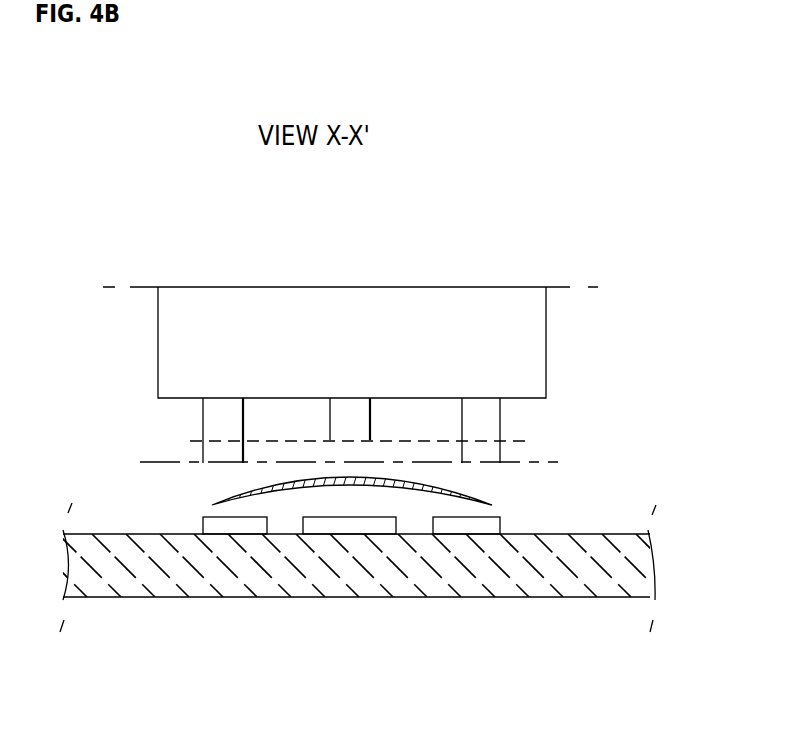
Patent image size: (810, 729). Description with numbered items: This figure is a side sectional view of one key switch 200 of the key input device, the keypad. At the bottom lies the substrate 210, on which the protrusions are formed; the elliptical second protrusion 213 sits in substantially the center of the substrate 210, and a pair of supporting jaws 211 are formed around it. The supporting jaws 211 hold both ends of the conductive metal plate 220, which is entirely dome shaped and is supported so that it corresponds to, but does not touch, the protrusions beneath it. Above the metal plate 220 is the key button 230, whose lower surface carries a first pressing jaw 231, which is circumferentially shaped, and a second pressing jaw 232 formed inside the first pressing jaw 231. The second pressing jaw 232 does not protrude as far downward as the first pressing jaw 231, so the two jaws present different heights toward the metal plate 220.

The key switch 200 is at (517, 245).
The substrate 210 is at (548, 583).
The supporting jaws 211 is at (465, 528).
The second protrusion 213 is at (387, 525).
The metal plate 220 is at (475, 493).
The key button 230 is at (538, 325).
The first pressing jaw 231 is at (215, 422).
The second pressing jaw 232 is at (342, 422).